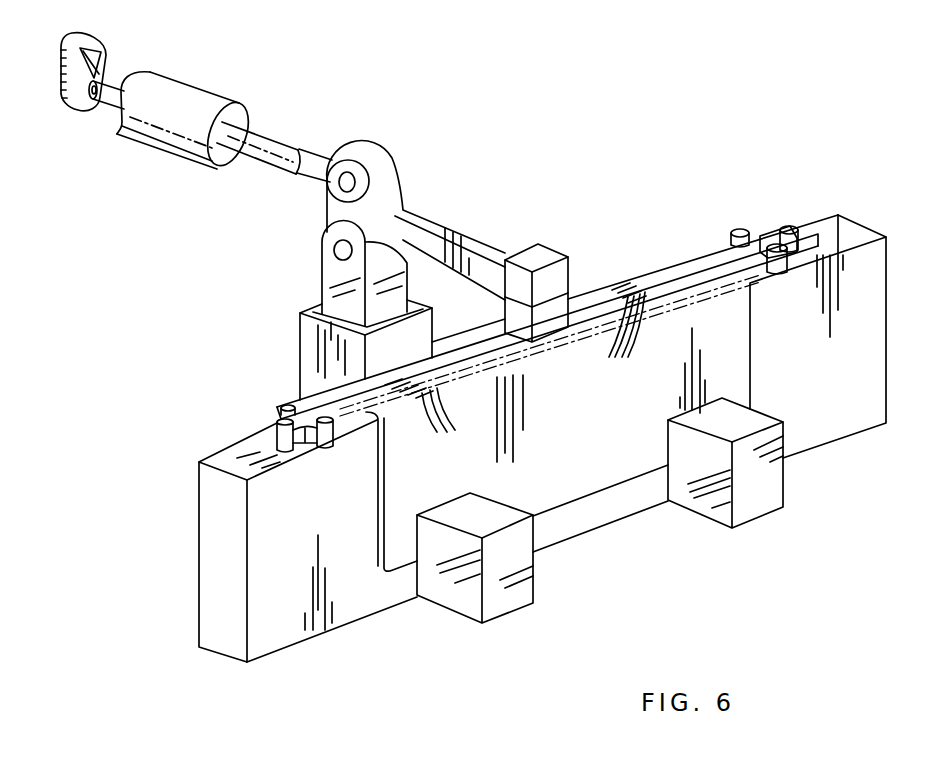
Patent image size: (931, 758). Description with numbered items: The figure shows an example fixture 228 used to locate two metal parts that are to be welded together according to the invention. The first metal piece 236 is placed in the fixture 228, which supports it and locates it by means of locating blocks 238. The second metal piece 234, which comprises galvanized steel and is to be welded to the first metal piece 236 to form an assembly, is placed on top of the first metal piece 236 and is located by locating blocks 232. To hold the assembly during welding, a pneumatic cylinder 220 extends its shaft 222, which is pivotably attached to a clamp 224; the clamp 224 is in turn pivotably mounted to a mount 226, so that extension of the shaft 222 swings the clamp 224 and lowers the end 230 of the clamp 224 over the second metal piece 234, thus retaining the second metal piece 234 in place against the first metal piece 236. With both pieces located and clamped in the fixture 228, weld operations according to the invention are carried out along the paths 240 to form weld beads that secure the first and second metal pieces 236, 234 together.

The pneumatic cylinder 220 is at (203, 108).
The shaft 222 is at (266, 143).
The clamp 224 is at (386, 198).
The mount 226 is at (331, 268).
The fixture 228 is at (817, 237).
The end of clamp 230 is at (566, 320).
The locating blocks 232 is at (277, 433).
The second metal piece 234 is at (680, 272).
The first metal piece 236 is at (560, 493).
The locating blocks 238 is at (447, 597).
The paths 240 is at (515, 372).